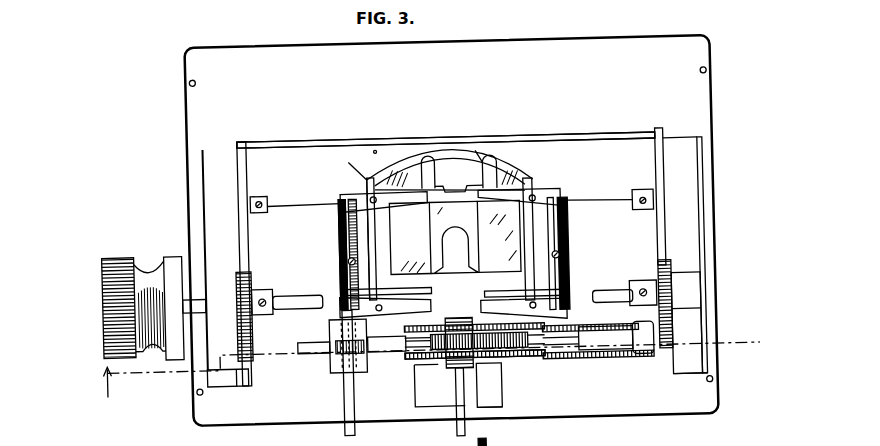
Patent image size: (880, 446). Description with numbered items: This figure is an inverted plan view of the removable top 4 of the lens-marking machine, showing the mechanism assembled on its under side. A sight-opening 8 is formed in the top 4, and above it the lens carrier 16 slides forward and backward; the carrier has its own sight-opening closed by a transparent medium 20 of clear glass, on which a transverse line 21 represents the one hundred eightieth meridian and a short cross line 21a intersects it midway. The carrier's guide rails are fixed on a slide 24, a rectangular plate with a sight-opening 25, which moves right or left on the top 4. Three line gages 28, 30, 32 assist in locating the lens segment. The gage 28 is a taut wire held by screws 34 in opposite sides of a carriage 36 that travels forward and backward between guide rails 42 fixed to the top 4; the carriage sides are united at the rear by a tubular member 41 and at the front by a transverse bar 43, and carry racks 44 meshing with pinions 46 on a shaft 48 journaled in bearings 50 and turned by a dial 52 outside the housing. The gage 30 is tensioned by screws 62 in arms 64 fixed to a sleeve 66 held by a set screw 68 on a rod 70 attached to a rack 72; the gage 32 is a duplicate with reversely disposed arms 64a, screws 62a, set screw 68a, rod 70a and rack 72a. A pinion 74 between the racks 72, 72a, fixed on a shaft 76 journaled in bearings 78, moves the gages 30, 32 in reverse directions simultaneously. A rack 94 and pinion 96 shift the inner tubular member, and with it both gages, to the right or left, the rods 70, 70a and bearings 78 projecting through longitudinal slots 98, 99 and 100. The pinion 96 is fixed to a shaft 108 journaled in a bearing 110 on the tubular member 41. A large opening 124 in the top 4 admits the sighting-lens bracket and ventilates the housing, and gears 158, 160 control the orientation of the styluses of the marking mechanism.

The top 4 is at (198, 111).
The sight-opening 8 is at (366, 176).
The lens carrier 16 is at (532, 180).
The transparent medium 20 is at (427, 149).
The transverse line 21 is at (477, 151).
The cross line 21a is at (458, 187).
The slide 24 is at (352, 160).
The sight-opening 25 is at (377, 148).
The line gage 28 is at (290, 206).
The line gage 30 is at (480, 221).
The line gage 32 is at (425, 239).
The screws 34 is at (640, 216).
The carriage 36 is at (652, 155).
The tubular member 41 is at (283, 385).
The guide rails 42 is at (689, 174).
The transverse bar 43 is at (550, 139).
The racks 44 is at (242, 265).
The pinions 46 is at (654, 277).
The shaft 48 is at (296, 288).
The bearings 50 is at (694, 288).
The dial 52 is at (118, 250).
The screws 62 is at (566, 191).
The screws 62a is at (371, 194).
The arms 64 is at (566, 198).
The arms 64a is at (341, 195).
The sleeve 66 is at (566, 238).
The set screw 68 is at (569, 255).
The set screw 68a is at (339, 256).
The rod 70 is at (566, 303).
The rod 70a is at (338, 307).
The rack 72 is at (475, 362).
The rack 72a is at (515, 364).
The pinion 74 is at (485, 361).
The shaft 76 is at (409, 406).
The bearings 78 is at (450, 318).
The rack 94 is at (327, 354).
The pinion 96 is at (335, 358).
The longitudinal slot 98 is at (583, 332).
The longitudinal slot 99 is at (422, 359).
The longitudinal slot 100 is at (590, 362).
The shaft 108 is at (338, 420).
The bearing 110 is at (377, 353).
The opening 124 is at (486, 408).
The gear 158 is at (493, 443).
The gear 160 is at (522, 443).